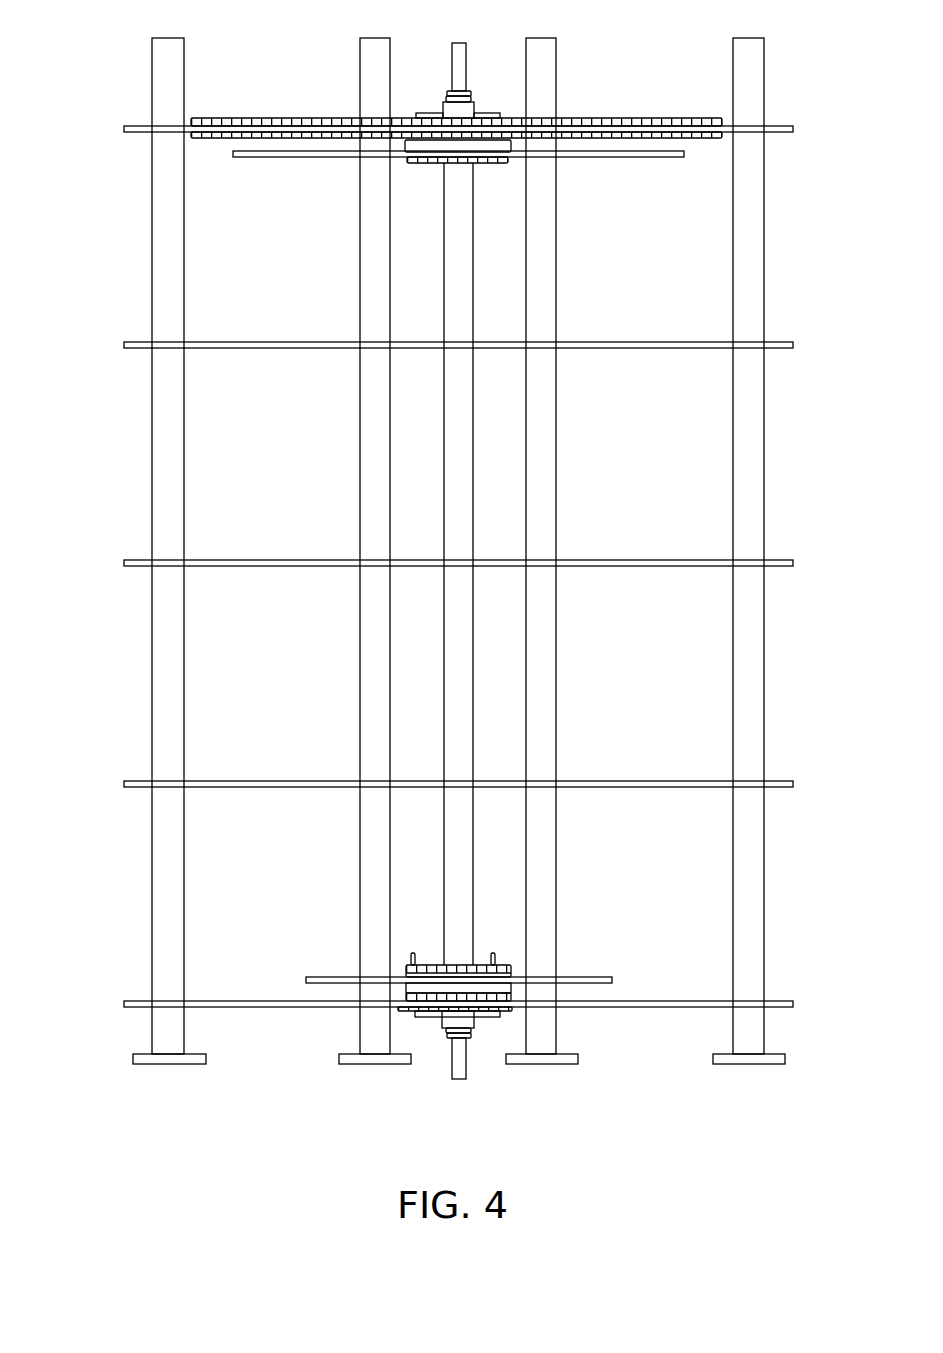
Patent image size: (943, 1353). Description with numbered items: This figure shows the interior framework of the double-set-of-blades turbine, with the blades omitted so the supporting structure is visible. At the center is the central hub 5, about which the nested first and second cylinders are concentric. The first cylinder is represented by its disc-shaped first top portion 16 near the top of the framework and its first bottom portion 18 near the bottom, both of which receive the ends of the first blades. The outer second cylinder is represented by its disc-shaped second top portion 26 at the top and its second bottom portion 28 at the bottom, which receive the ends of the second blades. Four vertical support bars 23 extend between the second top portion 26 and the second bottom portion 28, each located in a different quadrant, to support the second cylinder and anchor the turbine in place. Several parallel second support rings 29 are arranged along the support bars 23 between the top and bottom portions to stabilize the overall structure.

The central hub 5 is at (459, 43).
The first top portion 16 is at (300, 157).
The first bottom portion 18 is at (327, 977).
The support bars 23 is at (152, 70).
The second top portion 26 is at (323, 117).
The second bottom portion 28 is at (281, 1007).
The second support rings 29 is at (123, 342).